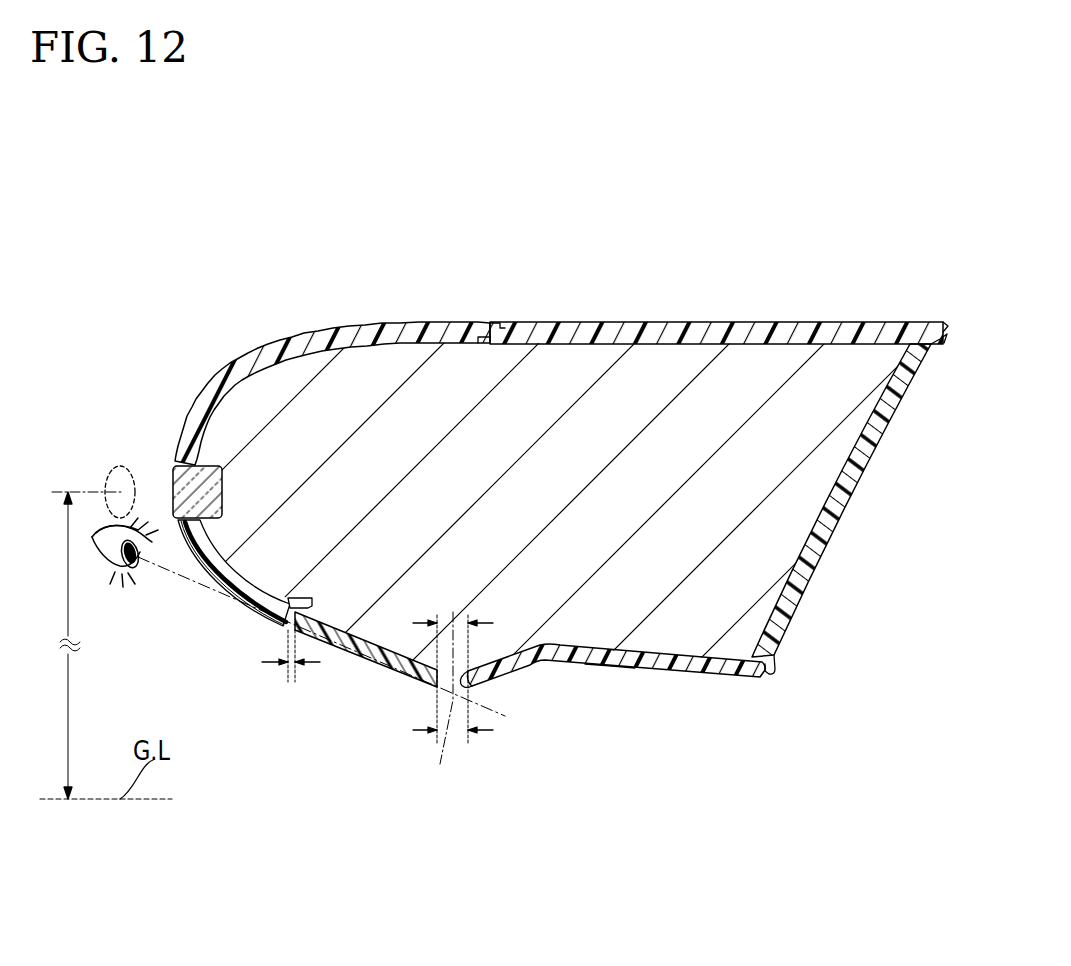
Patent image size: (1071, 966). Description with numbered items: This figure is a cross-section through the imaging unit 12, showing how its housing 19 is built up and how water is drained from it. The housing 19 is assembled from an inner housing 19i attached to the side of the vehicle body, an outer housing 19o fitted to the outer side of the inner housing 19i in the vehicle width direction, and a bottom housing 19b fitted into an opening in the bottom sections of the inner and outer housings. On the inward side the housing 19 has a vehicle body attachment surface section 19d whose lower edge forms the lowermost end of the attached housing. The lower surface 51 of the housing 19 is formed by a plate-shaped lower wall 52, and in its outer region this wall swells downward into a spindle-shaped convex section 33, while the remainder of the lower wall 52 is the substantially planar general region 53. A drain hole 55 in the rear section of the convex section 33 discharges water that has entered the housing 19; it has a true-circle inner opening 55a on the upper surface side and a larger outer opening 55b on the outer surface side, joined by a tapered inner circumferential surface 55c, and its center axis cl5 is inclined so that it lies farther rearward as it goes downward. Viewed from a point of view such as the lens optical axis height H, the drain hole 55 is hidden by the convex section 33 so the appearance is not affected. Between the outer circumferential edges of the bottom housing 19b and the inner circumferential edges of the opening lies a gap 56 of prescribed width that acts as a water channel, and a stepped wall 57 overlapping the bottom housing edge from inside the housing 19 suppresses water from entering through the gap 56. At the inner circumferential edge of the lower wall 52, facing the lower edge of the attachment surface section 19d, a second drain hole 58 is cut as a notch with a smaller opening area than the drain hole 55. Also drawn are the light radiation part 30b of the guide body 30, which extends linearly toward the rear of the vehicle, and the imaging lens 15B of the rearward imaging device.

The imaging unit 12 is at (773, 283).
The housing 19 is at (561, 490).
The outer housing 19o is at (380, 323).
The inner housing 19i is at (625, 322).
The vehicle body attachment surface section 19d is at (836, 497).
The bottom housing 19b is at (638, 673).
The second drain hole 58 is at (747, 673).
The general region 53 is at (598, 667).
The lower surface 51 is at (664, 733).
The lower wall 52 is at (620, 669).
The drain hole 55 is at (505, 679).
The inner opening 55a is at (447, 620).
The outer opening 55b is at (458, 732).
The inner circumferential surface 55c is at (470, 690).
The center axis cl5 is at (439, 703).
The convex section 33 is at (387, 667).
The gap 56 is at (290, 670).
The stepped wall 57 is at (308, 600).
The guide body 30 is at (155, 449).
The light radiation part 30b is at (177, 480).
The imaging lens 15B is at (107, 483).
The lens optical axis height H is at (64, 645).